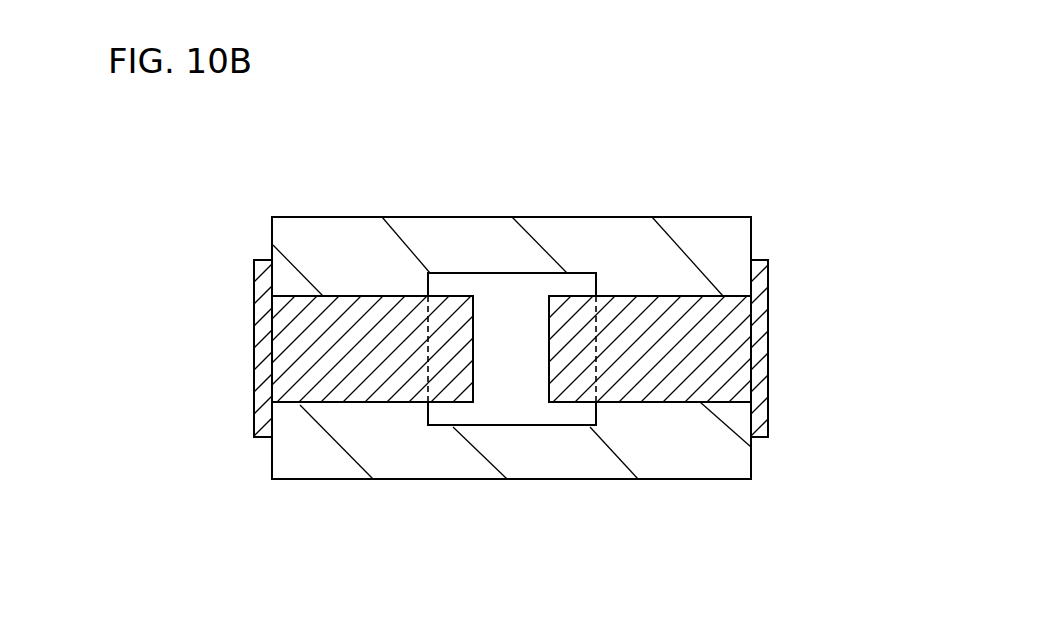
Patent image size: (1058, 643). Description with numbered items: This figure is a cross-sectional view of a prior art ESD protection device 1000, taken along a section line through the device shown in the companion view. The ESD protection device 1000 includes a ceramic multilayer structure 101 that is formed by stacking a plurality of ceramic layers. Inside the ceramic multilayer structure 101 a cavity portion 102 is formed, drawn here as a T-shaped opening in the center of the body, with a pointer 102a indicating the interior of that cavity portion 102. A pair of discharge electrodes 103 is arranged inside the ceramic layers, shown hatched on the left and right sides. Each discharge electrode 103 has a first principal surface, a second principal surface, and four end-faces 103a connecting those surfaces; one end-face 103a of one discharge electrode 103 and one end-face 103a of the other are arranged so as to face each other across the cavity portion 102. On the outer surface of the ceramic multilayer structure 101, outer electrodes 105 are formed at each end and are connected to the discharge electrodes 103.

The ESD protection device 1000 is at (237, 131).
The ceramic multilayer structure 101 is at (732, 227).
The cavity portion 102 is at (563, 275).
The inner end portion of region 102 102a is at (504, 345).
The discharge electrode 103 is at (268, 350).
The end-face 103a is at (475, 353).
The outer electrode 105 is at (247, 265).